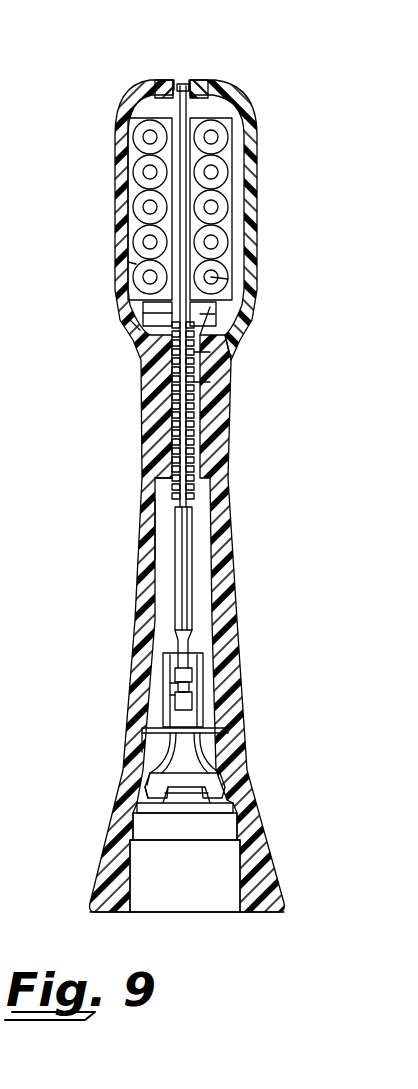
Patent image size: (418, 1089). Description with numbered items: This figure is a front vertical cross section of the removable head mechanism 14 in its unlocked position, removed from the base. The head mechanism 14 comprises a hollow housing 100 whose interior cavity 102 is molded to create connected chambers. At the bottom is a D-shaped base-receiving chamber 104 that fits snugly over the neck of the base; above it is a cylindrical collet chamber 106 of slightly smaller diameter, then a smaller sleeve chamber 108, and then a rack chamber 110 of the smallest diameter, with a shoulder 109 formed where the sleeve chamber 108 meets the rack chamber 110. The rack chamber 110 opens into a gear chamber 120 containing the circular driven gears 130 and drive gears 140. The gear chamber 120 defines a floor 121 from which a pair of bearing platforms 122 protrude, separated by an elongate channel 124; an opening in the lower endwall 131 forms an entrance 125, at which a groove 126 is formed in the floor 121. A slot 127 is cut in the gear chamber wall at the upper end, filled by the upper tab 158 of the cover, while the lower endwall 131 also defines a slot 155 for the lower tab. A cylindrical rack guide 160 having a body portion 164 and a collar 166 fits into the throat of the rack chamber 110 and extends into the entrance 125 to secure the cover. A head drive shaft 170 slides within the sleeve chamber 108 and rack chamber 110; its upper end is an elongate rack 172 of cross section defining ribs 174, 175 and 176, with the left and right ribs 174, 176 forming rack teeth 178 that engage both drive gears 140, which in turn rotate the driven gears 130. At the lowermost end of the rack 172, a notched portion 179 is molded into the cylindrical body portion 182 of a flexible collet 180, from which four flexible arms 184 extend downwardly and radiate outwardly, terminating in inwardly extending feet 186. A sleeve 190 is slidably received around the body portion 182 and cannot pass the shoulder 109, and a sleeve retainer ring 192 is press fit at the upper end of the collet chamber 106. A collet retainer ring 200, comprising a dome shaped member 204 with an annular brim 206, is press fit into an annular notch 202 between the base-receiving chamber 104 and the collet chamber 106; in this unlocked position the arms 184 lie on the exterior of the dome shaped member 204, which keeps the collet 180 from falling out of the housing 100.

The removable head mechanism 14 is at (264, 465).
The hollow housing 100 is at (232, 580).
The interior cavity 102 is at (206, 914).
The base-receiving chamber 104 is at (228, 868).
The collet chamber 106 is at (215, 757).
The sleeve chamber 108 is at (200, 538).
The shoulder 109 is at (163, 505).
The rack chamber 110 is at (200, 400).
The gear chamber 120 is at (255, 208).
The floor 121 is at (136, 264).
The bearing platforms 122 is at (135, 207).
The elongate channel 124 is at (155, 100).
The entrance 125 is at (157, 317).
The groove 126 is at (157, 313).
The slot 127 is at (193, 72).
The driven gears 130 is at (211, 137).
The lower endwall 131 is at (210, 307).
The drive gears 140 is at (228, 279).
The slot 155 is at (135, 318).
The upper tab 158 is at (198, 85).
The rack guide 160 is at (210, 352).
The body portion 164 is at (210, 382).
The collar 166 is at (215, 314).
The head drive shaft 170 is at (175, 523).
The elongate rack 172 is at (170, 442).
The left rib 174 is at (183, 612).
The rib 175 is at (183, 578).
The right rib 176 is at (200, 610).
The rack teeth 178 is at (180, 405).
The notched portion 179 is at (177, 680).
The collet 180 is at (183, 686).
The body portion 182 is at (195, 668).
The flexible arms 184 is at (142, 752).
The feet 186 is at (153, 768).
The sleeve 190 is at (170, 695).
The sleeve retainer ring 192 is at (232, 728).
The collet retainer ring 200 is at (236, 805).
The annular notch 202 is at (145, 803).
The dome shaped member 204 is at (215, 790).
The annular brim 206 is at (145, 787).